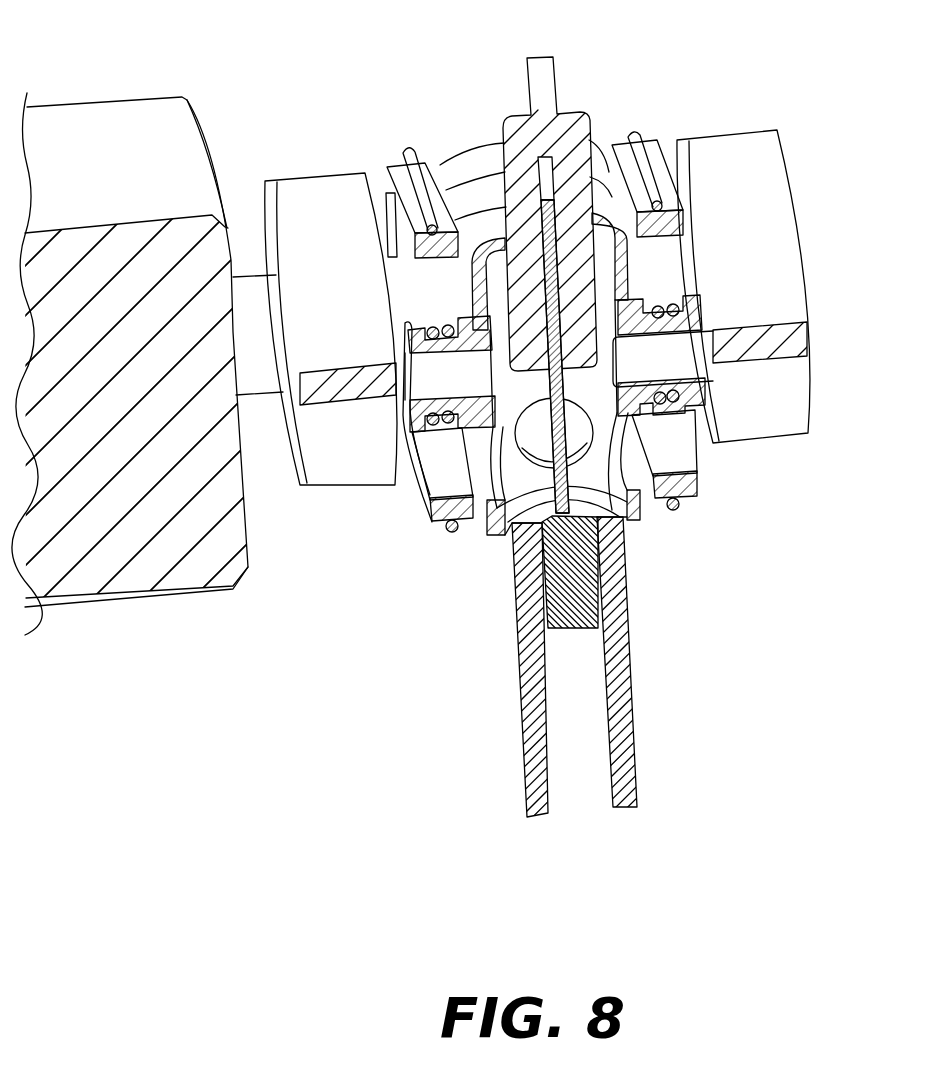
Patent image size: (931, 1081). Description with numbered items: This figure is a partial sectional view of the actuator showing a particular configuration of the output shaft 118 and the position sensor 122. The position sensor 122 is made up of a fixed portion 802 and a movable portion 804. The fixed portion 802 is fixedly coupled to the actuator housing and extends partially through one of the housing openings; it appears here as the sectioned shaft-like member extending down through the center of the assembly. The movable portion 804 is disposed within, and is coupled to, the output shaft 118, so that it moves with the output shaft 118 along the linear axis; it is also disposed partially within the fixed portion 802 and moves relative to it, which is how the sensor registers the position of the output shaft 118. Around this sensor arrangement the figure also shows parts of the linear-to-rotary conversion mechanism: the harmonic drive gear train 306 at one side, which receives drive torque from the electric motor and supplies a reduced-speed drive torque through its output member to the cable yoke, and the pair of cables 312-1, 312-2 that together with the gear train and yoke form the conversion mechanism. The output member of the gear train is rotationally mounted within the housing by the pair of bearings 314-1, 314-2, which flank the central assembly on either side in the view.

The harmonic drive gear train 306 is at (127, 115).
The bearing 314-1 is at (333, 187).
The bearing 314-2 is at (737, 147).
The cable 312-1 is at (407, 152).
The cable 312-2 is at (632, 140).
The position sensor 122 is at (432, 95).
The fixed portion 802 is at (577, 130).
The movable portion 804 is at (590, 578).
The output shaft 118 is at (632, 685).